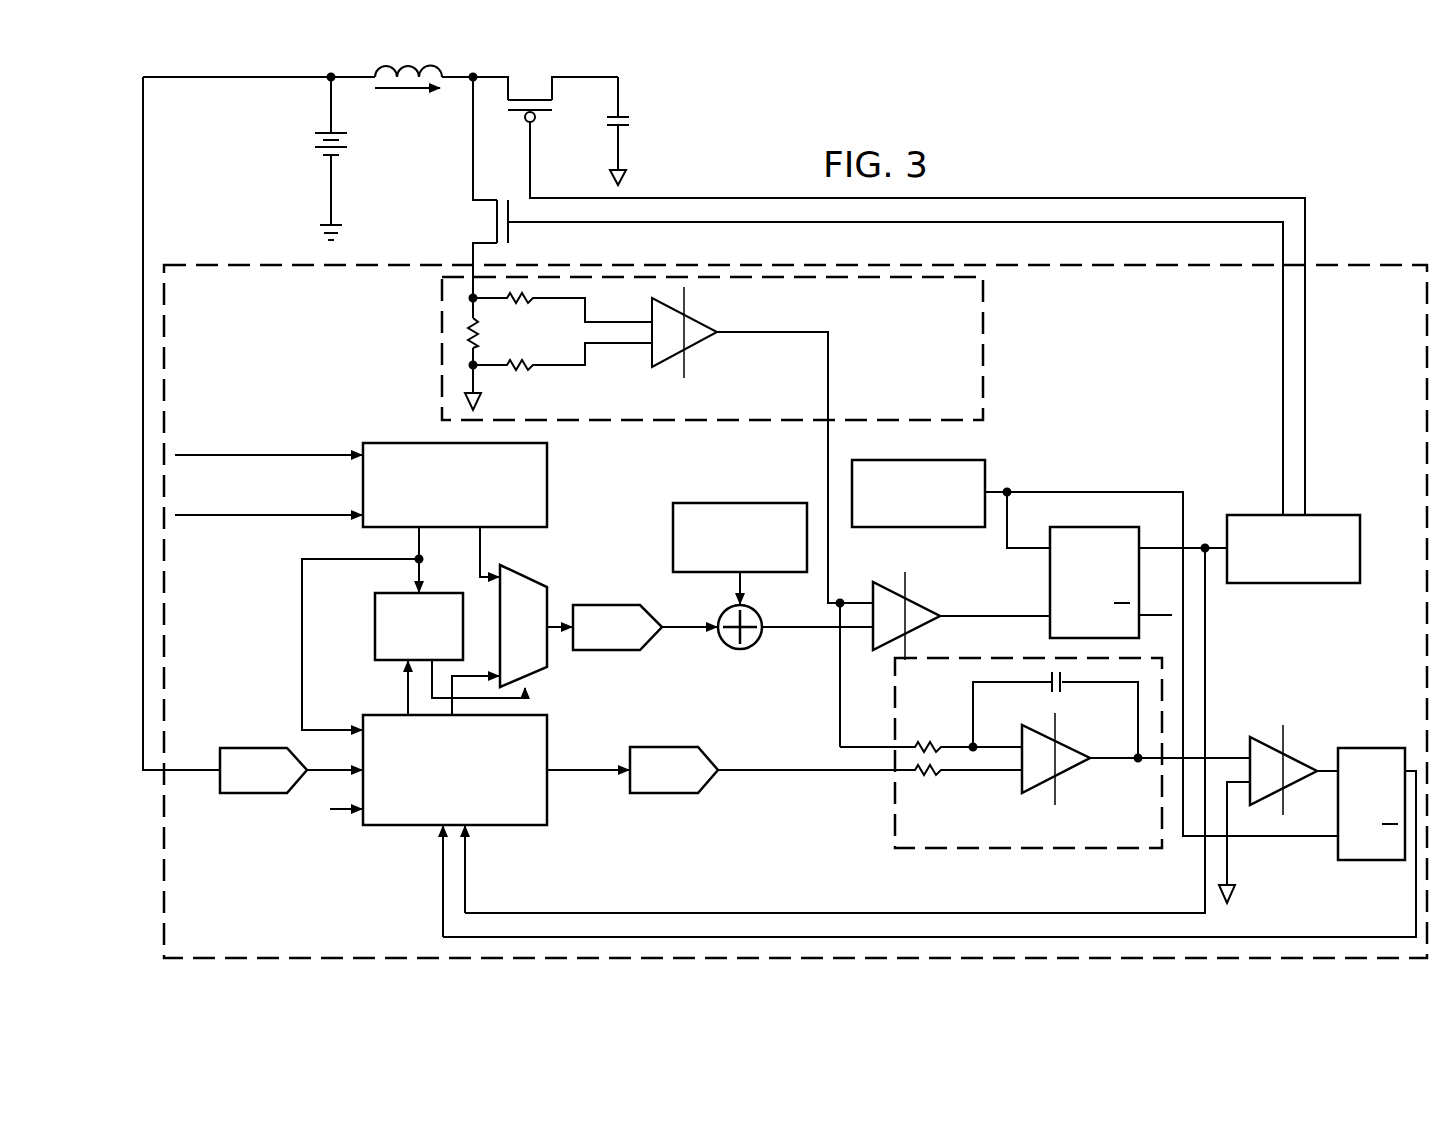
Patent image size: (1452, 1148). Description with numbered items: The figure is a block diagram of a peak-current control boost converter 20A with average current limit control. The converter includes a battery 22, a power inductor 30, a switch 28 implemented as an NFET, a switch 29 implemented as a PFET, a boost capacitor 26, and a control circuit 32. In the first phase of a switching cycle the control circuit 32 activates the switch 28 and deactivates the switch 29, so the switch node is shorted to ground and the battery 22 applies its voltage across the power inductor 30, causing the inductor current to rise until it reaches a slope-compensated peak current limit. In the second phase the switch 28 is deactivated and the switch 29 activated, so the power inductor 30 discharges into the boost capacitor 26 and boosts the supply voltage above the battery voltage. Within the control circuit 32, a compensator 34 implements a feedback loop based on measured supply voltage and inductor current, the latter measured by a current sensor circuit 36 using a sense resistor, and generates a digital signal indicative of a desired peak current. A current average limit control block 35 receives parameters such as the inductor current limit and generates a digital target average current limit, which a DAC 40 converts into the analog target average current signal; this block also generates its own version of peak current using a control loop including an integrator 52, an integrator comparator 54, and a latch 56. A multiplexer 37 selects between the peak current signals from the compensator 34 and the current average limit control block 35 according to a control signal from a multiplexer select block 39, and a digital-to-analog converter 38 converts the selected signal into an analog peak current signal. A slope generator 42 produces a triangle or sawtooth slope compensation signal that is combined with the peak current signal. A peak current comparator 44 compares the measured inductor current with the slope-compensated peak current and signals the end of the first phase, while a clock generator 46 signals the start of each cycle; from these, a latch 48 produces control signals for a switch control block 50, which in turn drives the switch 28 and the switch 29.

The peak-current control boost converter 20A is at (1230, 120).
The battery 22 is at (315, 140).
The boost capacitor 26 is at (607, 121).
The switch 28 is at (511, 226).
The switch 29 is at (524, 120).
The power inductor 30 is at (396, 66).
The control circuit 32 is at (1253, 334).
The compensator 34 is at (549, 482).
The current average limit control block 35 is at (405, 827).
The current sensor circuit 36 is at (987, 348).
The multiplexer 37 is at (538, 641).
The digital-to-analog converter 38 is at (608, 603).
The multiplexer select block 39 is at (373, 628).
The DAC 40 is at (660, 795).
The slope generator 42 is at (673, 537).
The peak current comparator 44 is at (925, 601).
The clock generator 46 is at (985, 475).
The latch 48 is at (1050, 583).
The switch control block 50 is at (1296, 584).
The integrator 52 is at (893, 821).
The integrator comparator 54 is at (1295, 756).
The latch 56 is at (1365, 862).